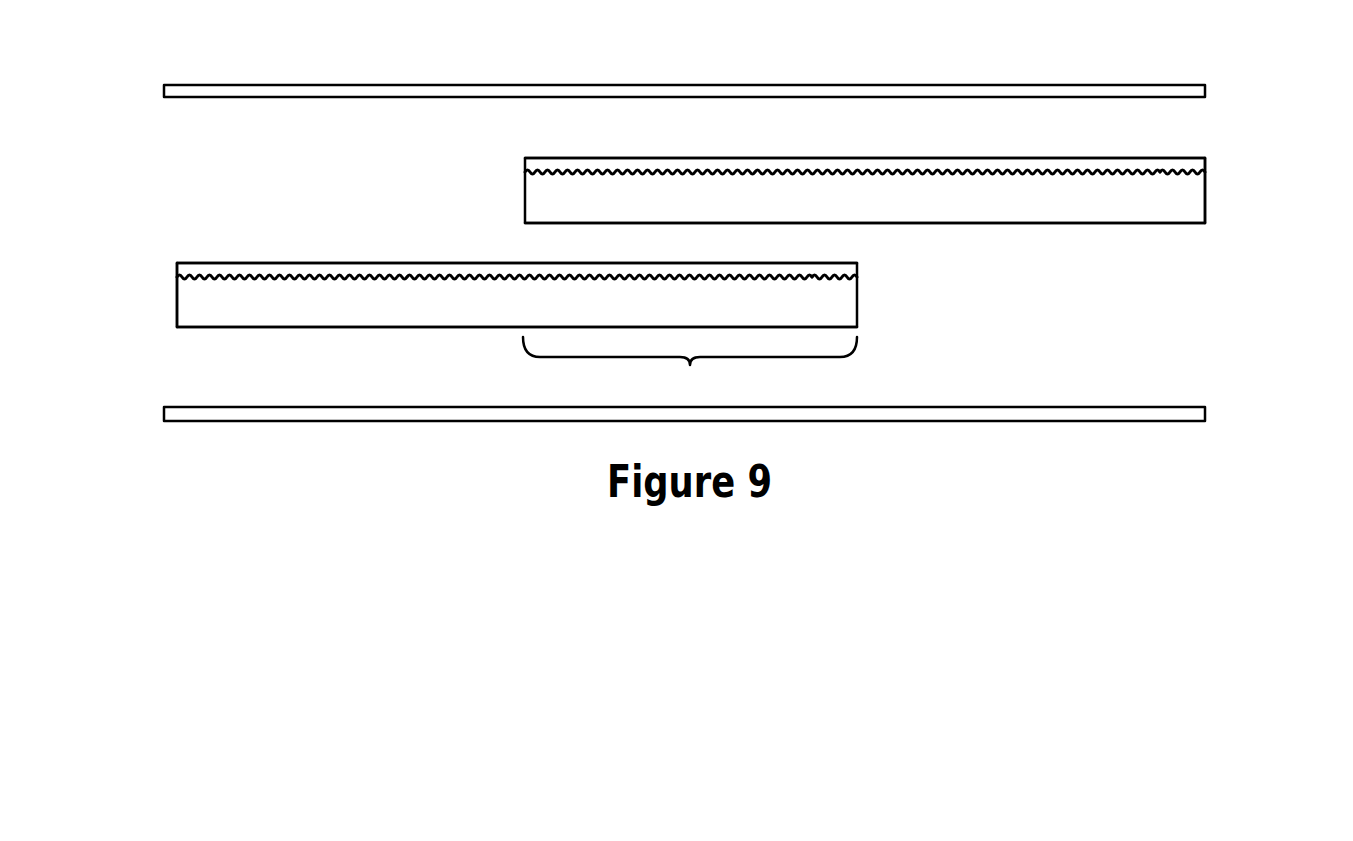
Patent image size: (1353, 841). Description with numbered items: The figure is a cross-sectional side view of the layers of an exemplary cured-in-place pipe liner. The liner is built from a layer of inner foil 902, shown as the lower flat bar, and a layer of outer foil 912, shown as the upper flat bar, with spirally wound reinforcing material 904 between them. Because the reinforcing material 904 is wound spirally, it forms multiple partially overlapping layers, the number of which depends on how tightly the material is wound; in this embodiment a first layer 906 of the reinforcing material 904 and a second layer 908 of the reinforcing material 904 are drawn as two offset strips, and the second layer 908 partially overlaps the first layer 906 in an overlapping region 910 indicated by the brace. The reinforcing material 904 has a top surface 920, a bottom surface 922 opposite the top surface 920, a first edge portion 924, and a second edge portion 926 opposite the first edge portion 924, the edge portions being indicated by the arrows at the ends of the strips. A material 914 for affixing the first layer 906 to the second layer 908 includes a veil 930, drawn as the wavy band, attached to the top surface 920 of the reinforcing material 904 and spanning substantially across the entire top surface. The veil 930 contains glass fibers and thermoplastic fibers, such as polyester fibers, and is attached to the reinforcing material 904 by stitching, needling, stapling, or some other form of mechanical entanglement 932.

The inner foil 902 is at (1205, 412).
The reinforcing material 904 is at (1158, 208).
The first layer 906 is at (176, 317).
The second layer 908 is at (1205, 178).
The overlapping region 910 is at (690, 368).
The outer foil 912 is at (1205, 92).
The material for affixing 914 is at (615, 168).
The top surface 920 is at (572, 158).
The bottom surface 922 is at (978, 223).
The first edge portion 924 is at (490, 169).
The second edge portion 926 is at (892, 297).
The veil 930 is at (752, 168).
The mechanical entanglement 932 is at (1162, 172).